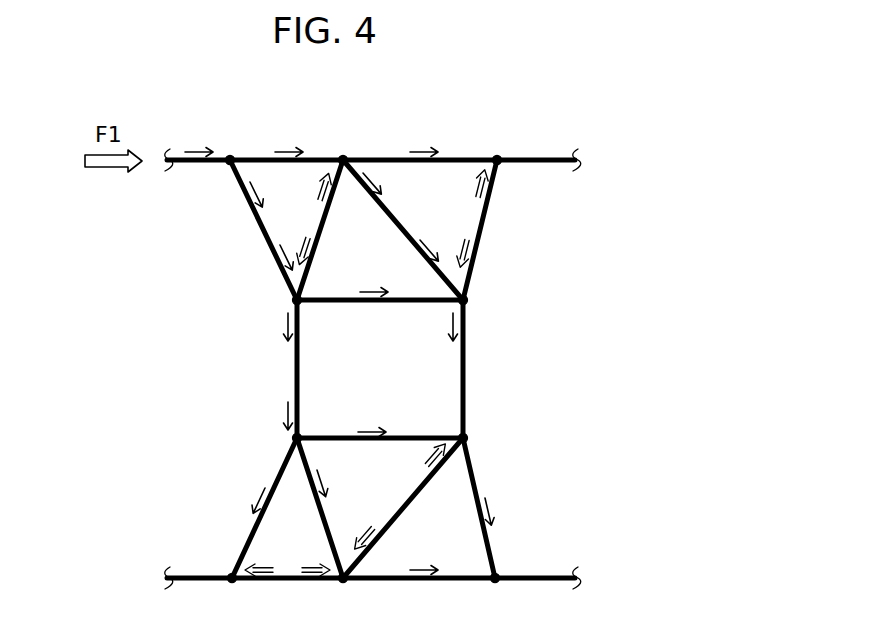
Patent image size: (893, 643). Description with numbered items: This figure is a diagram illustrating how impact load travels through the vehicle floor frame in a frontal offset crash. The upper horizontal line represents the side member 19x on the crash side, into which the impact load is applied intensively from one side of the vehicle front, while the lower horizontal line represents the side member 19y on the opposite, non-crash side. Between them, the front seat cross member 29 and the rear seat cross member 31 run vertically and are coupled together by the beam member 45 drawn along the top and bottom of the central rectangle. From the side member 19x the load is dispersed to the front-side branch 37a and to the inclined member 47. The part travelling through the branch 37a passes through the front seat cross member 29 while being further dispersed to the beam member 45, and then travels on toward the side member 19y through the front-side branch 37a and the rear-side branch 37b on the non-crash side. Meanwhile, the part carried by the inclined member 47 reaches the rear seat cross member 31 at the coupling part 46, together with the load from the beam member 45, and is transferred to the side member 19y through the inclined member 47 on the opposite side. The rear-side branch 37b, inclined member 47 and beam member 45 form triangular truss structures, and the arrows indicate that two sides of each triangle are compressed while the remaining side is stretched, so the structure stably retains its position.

The side member 19x is at (387, 158).
The side member 19y is at (393, 582).
The front-side branch 37a is at (258, 225).
The rear-side branch 37b is at (323, 225).
The inclined member 47 is at (402, 220).
The coupling part 46 is at (477, 252).
The beam member 45 is at (345, 302).
The front seat cross member 29 is at (292, 367).
The rear seat cross member 31 is at (465, 367).